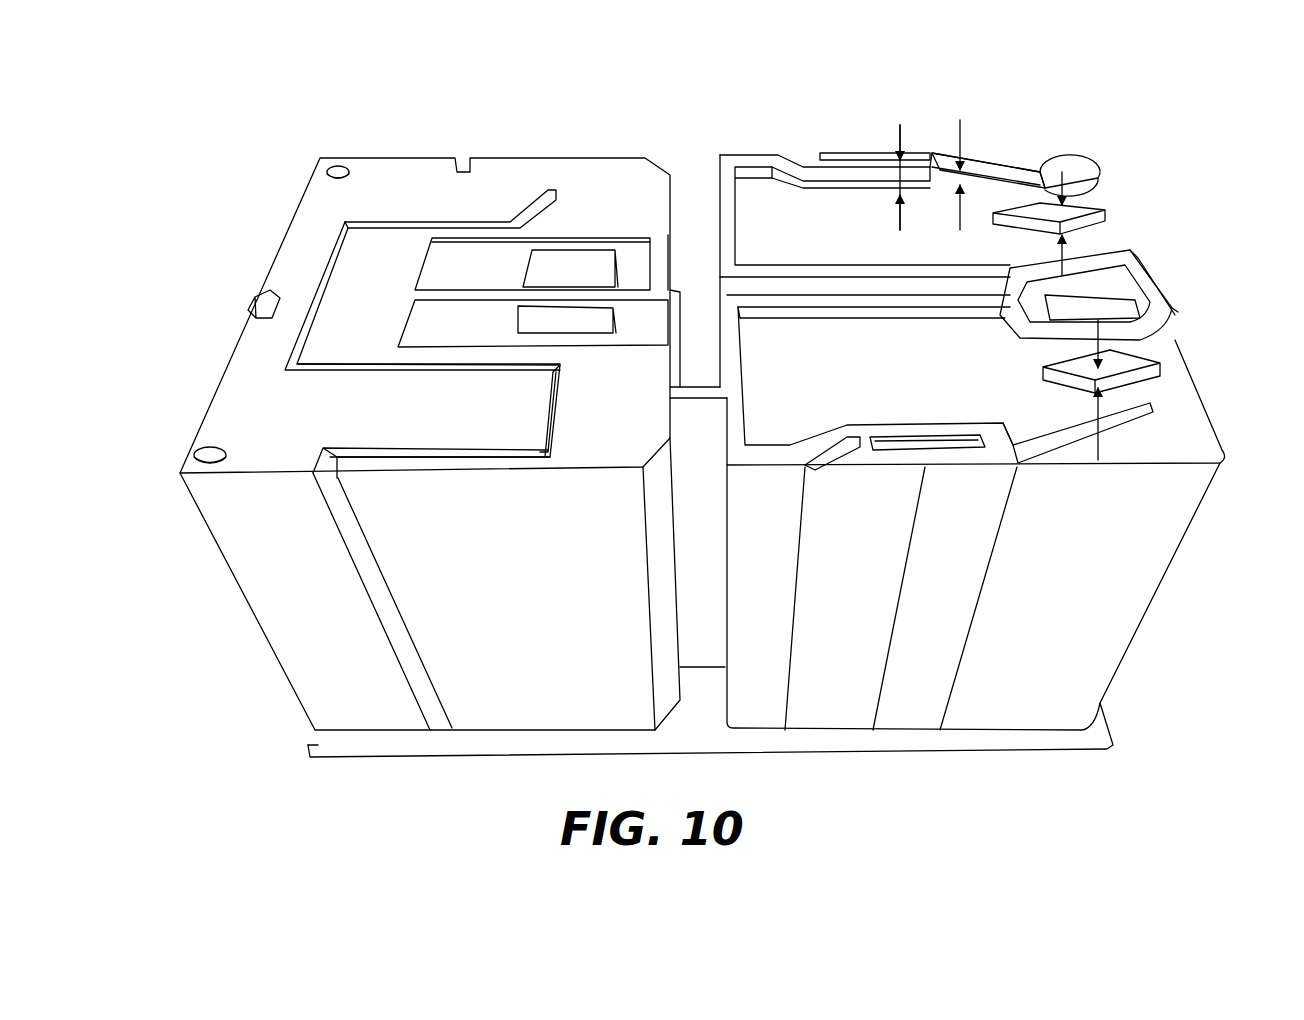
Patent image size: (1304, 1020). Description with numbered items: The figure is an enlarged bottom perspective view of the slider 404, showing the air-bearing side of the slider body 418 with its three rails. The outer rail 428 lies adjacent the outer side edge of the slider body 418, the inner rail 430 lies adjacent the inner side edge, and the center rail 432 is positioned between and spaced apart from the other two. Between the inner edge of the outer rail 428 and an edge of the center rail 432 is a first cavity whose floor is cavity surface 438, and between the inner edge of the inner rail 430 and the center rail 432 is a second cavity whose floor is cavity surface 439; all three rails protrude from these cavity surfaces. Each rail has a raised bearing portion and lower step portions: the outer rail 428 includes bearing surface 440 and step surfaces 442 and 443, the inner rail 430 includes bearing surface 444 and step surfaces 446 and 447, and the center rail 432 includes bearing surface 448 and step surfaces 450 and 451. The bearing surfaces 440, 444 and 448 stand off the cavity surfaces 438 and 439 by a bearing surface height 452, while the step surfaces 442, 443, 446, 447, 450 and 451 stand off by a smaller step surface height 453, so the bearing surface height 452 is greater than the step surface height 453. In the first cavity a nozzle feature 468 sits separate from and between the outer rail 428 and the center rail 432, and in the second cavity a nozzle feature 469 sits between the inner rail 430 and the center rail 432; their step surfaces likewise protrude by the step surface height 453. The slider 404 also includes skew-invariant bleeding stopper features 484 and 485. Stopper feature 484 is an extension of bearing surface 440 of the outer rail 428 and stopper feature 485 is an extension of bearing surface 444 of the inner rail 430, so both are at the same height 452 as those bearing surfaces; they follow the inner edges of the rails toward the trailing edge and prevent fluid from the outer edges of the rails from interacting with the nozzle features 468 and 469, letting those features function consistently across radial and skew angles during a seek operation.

The slider 404 is at (1130, 98).
The slider body 418 is at (232, 576).
The outer rail 428 is at (928, 150).
The inner rail 430 is at (1000, 418).
The center rail 432 is at (922, 318).
The cavity surface 438 is at (873, 221).
The cavity surface 439 is at (875, 376).
The bearing surface 440 is at (840, 150).
The step surface 442 is at (1030, 160).
The step surface 443 is at (803, 150).
The bearing surface 444 is at (953, 437).
The step surface 446 is at (1182, 440).
The step surface 447 is at (853, 460).
The bearing surface 448 is at (1135, 268).
The step surface 450 is at (1100, 240).
The step surface 451 is at (1050, 305).
The bearing surface height 452 is at (900, 205).
The step surface height 453 is at (960, 205).
The nozzle feature 468 is at (1022, 228).
The nozzle feature 469 is at (1168, 355).
The stopper feature 484 is at (1003, 160).
The stopper feature 485 is at (1068, 450).